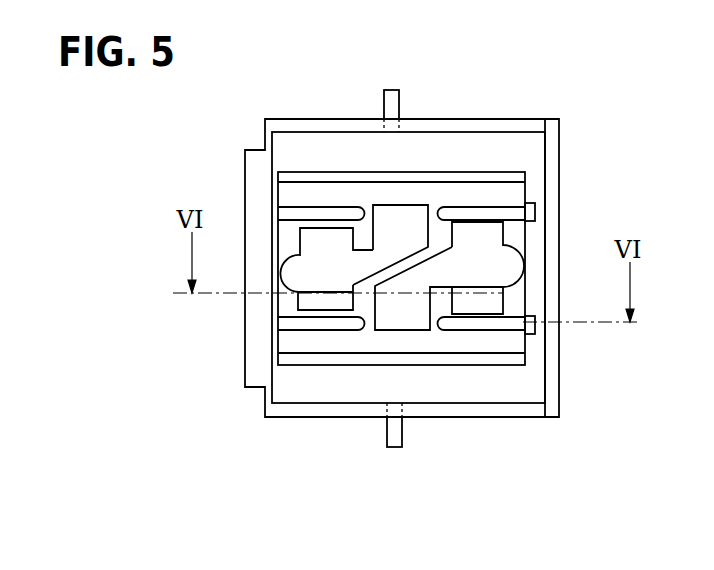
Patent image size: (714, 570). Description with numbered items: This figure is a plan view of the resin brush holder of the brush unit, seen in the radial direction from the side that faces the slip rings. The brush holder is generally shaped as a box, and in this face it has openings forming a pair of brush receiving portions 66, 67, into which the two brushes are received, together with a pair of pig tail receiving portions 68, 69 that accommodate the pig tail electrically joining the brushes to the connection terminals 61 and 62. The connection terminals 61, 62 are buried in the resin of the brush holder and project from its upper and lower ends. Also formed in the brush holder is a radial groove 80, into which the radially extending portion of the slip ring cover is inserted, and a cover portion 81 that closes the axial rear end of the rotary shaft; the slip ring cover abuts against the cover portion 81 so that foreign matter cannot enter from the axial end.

The connection terminal 61 is at (393, 97).
The connection terminal 62 is at (393, 447).
The brush receiving portion 66 is at (312, 245).
The brush receiving portion 67 is at (492, 305).
The pig tail receiving portion 68 is at (410, 217).
The pig tail receiving portion 69 is at (410, 317).
The radial groove 80 is at (533, 267).
The cover portion 81 is at (561, 367).